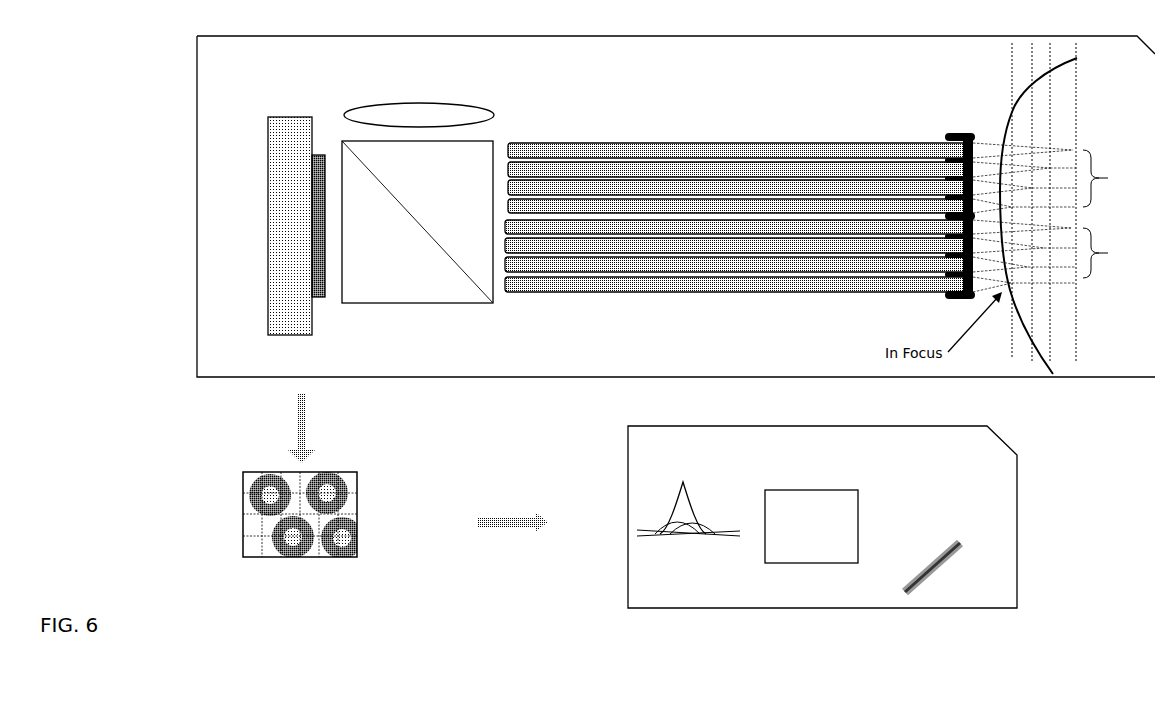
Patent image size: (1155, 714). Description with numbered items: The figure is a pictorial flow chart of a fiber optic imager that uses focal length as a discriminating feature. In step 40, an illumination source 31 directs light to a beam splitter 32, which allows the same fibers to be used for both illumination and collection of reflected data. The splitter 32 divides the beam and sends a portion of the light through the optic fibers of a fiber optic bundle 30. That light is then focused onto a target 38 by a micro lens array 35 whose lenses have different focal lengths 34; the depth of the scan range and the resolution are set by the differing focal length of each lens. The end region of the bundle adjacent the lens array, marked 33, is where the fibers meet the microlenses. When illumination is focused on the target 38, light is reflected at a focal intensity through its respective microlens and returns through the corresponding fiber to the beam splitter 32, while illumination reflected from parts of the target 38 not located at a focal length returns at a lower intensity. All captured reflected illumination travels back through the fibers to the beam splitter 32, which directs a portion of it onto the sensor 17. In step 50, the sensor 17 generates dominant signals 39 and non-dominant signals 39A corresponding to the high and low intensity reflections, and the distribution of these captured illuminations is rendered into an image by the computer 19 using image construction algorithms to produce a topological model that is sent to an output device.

The sensor 17 is at (268, 117).
The computer 19 is at (802, 516).
The fiber optic bundle 30 is at (632, 292).
The illumination source 31 is at (490, 103).
The beam splitter 32 is at (450, 305).
The fiber optic end face 33 is at (982, 296).
The different focal lengths 34 is at (1113, 214).
The micro lens array 35 is at (954, 128).
The target 38 is at (995, 125).
The dominant signals 39 is at (672, 514).
The non-dominant signals 39A is at (686, 540).
The step 40 is at (745, 73).
The step 50 is at (993, 480).